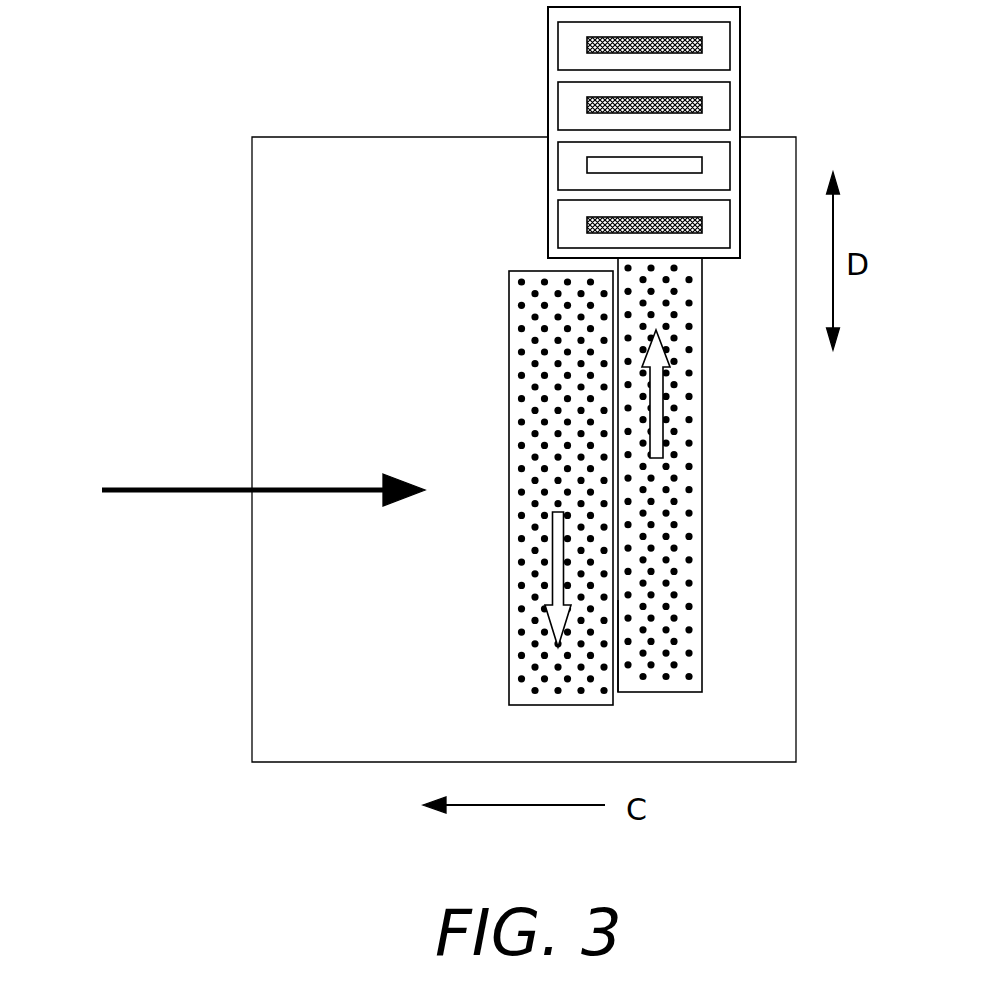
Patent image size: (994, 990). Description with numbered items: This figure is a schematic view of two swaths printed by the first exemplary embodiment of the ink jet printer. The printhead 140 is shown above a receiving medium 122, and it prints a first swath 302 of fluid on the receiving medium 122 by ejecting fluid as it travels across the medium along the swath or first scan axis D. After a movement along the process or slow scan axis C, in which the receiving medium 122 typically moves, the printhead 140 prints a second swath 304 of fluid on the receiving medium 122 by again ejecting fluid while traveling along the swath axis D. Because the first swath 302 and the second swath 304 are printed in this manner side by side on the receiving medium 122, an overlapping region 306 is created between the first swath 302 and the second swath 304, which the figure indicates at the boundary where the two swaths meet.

The printhead 140 is at (740, 47).
The first swath 302 is at (702, 462).
The second swath 304 is at (532, 393).
The overlapping region 306 is at (617, 693).
The receiving medium 122 is at (229, 489).